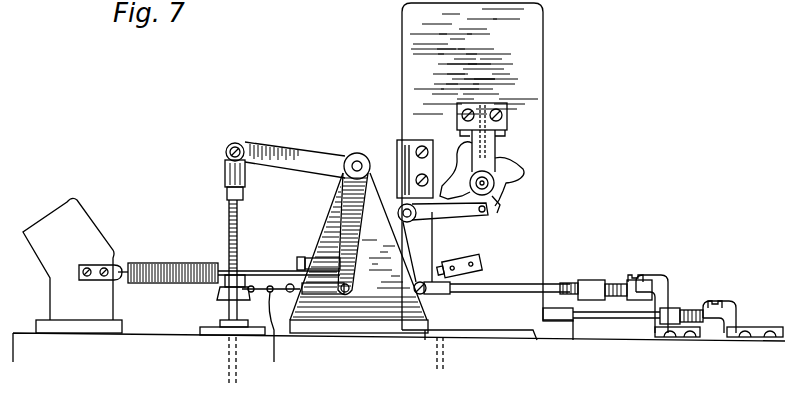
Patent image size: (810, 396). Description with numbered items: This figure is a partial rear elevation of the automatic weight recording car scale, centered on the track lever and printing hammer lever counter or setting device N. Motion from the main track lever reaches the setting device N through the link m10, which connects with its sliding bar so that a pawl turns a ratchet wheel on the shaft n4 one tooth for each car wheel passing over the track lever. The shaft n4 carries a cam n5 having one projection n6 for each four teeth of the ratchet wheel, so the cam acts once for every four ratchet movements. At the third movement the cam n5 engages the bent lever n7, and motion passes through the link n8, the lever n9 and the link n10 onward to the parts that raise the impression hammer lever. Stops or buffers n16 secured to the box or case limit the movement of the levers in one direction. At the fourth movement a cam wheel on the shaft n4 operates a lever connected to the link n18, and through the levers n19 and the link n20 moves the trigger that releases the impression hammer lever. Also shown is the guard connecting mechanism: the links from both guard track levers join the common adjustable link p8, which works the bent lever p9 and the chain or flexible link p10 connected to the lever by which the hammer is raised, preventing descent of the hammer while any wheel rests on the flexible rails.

The track lever and printing hammer lever counter or setting device N is at (487, 171).
The common adjustable link p8 is at (230, 228).
The bent lever p9 is at (335, 202).
The chain or flexible link p10 is at (286, 336).
The link m10 is at (443, 358).
The shaft n4 is at (497, 193).
The cam n5 is at (505, 201).
The projection n6 is at (513, 165).
The bent lever n7 is at (417, 248).
The link n8 is at (553, 283).
The lever n9 is at (627, 288).
The link n10 is at (570, 287).
The stops or buffers n16 is at (481, 265).
The link n18 is at (568, 322).
The levers n19 is at (717, 310).
The link n20 is at (622, 319).